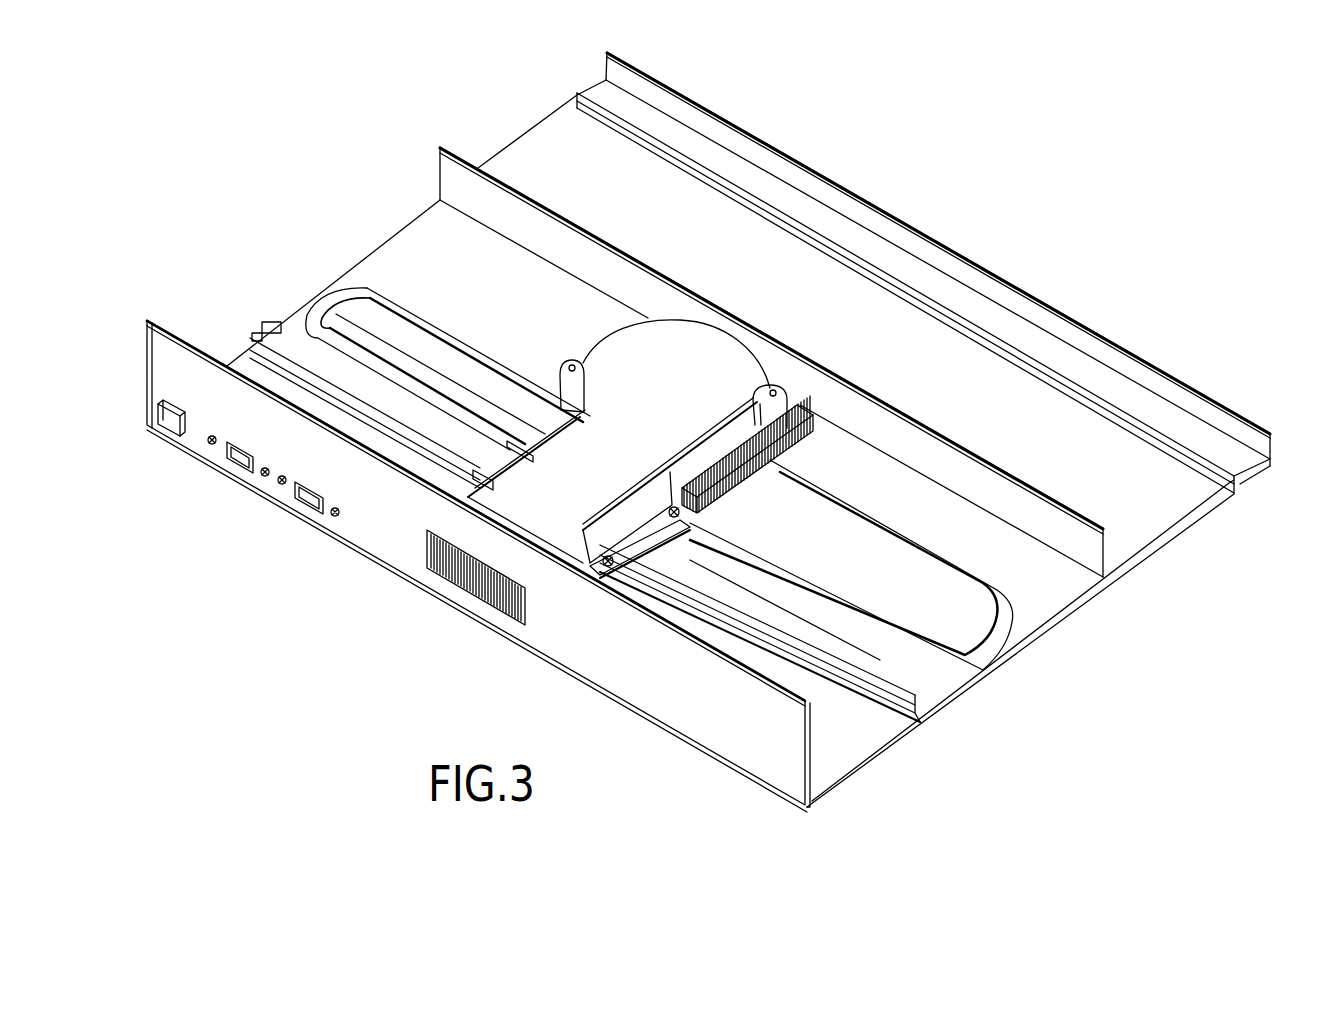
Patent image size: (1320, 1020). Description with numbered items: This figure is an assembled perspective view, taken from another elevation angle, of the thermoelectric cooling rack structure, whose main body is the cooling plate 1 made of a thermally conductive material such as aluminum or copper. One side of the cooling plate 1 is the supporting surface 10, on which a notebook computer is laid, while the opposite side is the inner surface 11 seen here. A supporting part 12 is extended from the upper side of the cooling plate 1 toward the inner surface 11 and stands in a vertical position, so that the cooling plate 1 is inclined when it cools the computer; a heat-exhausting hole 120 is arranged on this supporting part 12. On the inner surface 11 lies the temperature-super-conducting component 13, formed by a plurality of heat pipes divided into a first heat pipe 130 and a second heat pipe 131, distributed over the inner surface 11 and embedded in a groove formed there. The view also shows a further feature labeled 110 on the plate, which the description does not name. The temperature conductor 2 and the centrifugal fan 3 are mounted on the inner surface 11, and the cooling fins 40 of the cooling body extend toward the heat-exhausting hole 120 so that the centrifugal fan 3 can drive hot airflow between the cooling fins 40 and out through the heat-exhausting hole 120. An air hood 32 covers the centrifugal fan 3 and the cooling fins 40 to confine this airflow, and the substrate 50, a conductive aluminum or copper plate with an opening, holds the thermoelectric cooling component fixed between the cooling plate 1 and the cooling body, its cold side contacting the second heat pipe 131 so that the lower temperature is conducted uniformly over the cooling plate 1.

The cooling plate 1 is at (1092, 608).
The temperature conductor 2 is at (800, 458).
The centrifugal fan 3 is at (810, 400).
The supporting surface 10 is at (1015, 655).
The inner surface 11 is at (411, 240).
The supporting part 12 is at (385, 517).
The temperature-super-conducting component 13 is at (308, 224).
The air hood 32 is at (522, 513).
The cooling fins 40 is at (489, 602).
The substrate 50 is at (664, 573).
The guide rail 110 is at (918, 716).
The heat-exhausting hole 120 is at (507, 517).
The first heat pipe 130 is at (333, 305).
The second heat pipe 131 is at (283, 335).